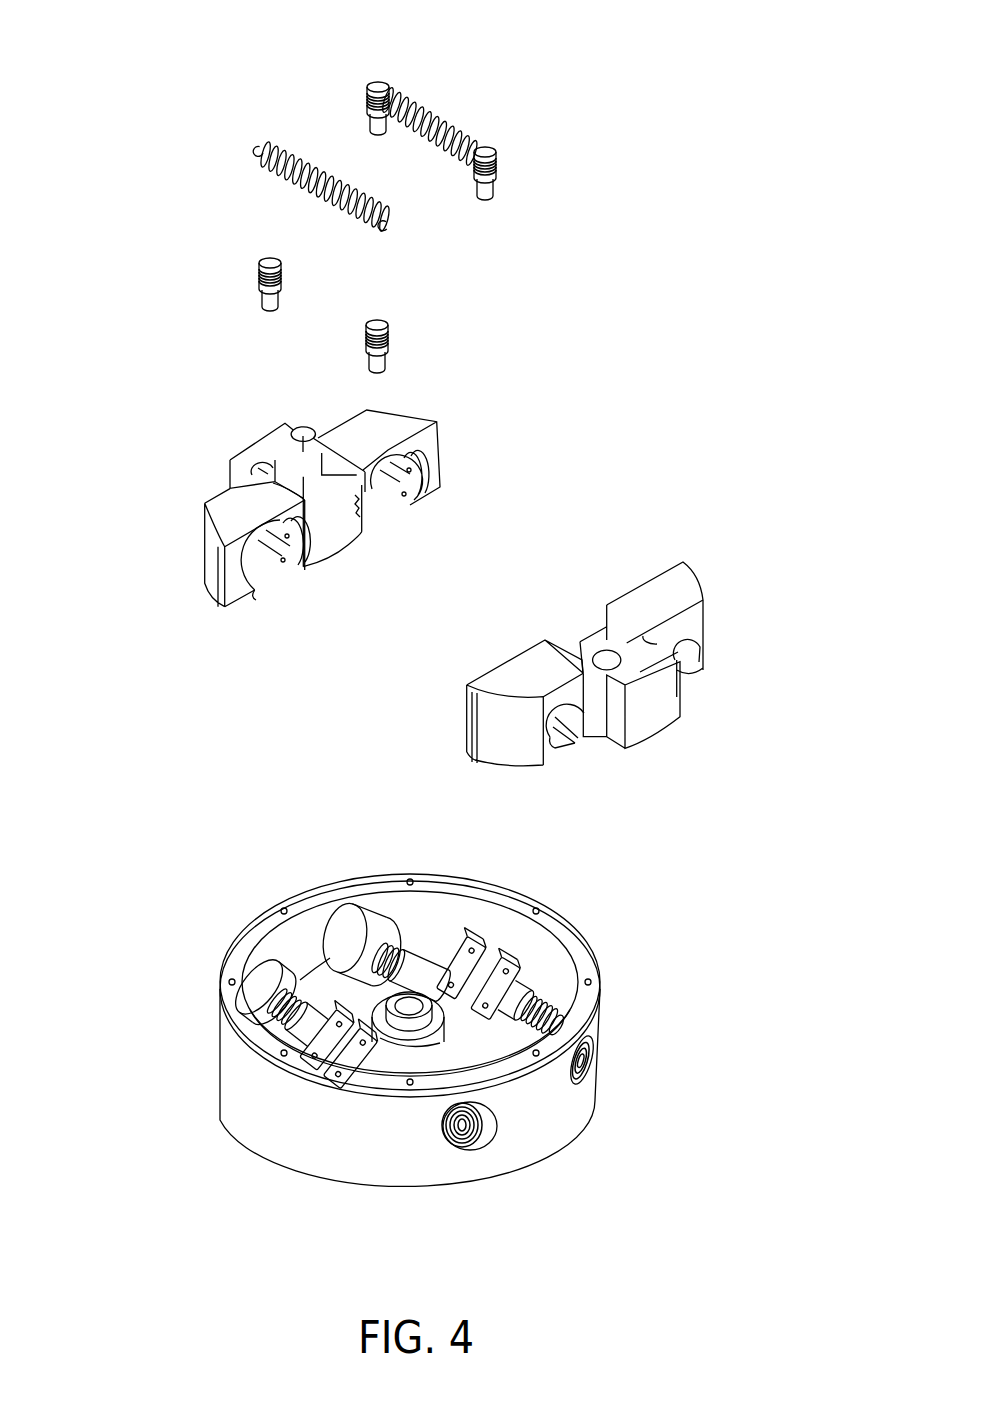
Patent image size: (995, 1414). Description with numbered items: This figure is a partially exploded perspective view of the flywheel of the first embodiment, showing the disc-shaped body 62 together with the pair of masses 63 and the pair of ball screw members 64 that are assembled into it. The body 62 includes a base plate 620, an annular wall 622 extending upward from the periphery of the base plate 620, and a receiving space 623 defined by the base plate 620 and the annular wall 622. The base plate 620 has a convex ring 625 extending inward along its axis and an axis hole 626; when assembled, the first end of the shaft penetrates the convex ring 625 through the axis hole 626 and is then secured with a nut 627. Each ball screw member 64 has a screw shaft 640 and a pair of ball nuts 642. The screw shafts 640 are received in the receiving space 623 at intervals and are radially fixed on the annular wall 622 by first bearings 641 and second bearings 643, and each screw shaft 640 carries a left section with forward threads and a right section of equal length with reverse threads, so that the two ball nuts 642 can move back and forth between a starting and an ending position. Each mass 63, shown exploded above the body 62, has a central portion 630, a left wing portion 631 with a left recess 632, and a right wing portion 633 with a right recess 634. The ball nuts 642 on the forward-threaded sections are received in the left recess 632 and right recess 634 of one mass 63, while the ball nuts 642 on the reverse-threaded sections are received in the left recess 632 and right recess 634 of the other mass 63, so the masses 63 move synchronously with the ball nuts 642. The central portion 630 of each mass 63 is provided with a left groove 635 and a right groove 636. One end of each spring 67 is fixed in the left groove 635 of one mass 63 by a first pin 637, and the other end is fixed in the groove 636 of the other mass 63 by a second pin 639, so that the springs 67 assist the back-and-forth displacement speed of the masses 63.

The body 62 is at (388, 1012).
The base plate 620 is at (322, 990).
The annular wall 622 is at (547, 1110).
The receiving space 623 is at (272, 960).
The convex ring 625 is at (478, 1128).
The axis hole 626 is at (412, 1007).
The nut 627 is at (388, 993).
The mass 63 is at (450, 584).
The central portion 630 is at (272, 442).
The left wing portion 631 is at (232, 518).
The left recess 632 is at (270, 580).
The right wing portion 633 is at (413, 426).
The right recess 634 is at (382, 505).
The left groove 635 is at (255, 455).
The right groove 636 is at (301, 448).
The first pin 637 is at (378, 84).
The second pin 639 is at (492, 150).
The ball screw member 64 is at (441, 1011).
The screw shaft 640 is at (545, 1010).
The first bearing 641 is at (595, 1063).
The ball nut 642 is at (494, 951).
The second bearing 643 is at (470, 1137).
The spring 67 is at (441, 108).